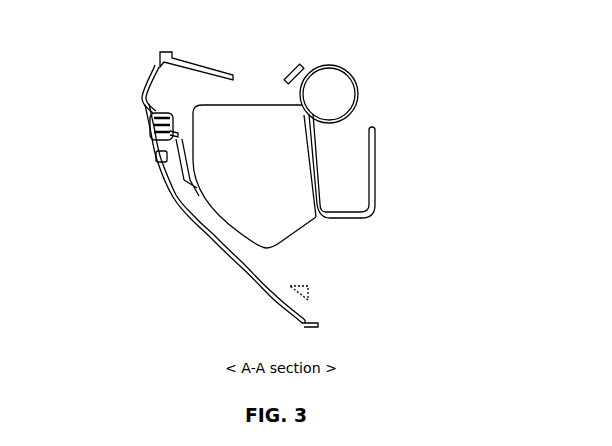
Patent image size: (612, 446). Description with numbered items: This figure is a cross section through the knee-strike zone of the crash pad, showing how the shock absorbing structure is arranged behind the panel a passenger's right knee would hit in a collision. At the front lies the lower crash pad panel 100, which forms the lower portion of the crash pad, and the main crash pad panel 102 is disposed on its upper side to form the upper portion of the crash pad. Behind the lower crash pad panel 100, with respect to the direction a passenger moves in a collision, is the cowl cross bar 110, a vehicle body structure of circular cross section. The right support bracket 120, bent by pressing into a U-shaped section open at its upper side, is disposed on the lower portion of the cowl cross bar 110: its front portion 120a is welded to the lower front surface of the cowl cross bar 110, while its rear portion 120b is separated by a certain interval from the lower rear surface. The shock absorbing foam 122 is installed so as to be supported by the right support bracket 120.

The lower crash pad panel 100 is at (232, 257).
The main crash pad panel 102 is at (160, 63).
The cowl cross bar 110 is at (343, 69).
The right support bracket 120 is at (372, 223).
The front portion 120a is at (314, 158).
The rear portion 120b is at (375, 168).
The shock absorbing foam 122 is at (258, 105).